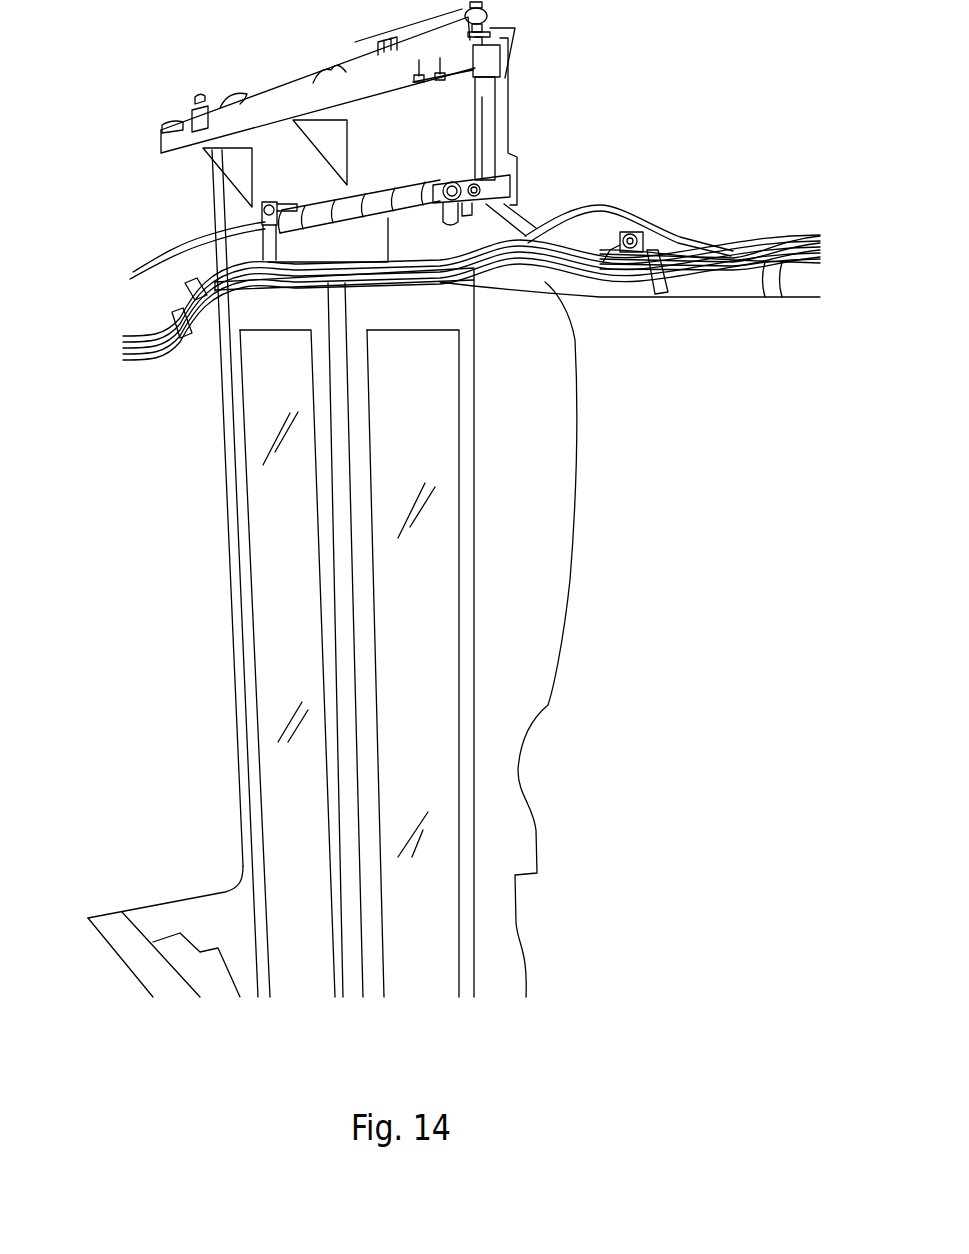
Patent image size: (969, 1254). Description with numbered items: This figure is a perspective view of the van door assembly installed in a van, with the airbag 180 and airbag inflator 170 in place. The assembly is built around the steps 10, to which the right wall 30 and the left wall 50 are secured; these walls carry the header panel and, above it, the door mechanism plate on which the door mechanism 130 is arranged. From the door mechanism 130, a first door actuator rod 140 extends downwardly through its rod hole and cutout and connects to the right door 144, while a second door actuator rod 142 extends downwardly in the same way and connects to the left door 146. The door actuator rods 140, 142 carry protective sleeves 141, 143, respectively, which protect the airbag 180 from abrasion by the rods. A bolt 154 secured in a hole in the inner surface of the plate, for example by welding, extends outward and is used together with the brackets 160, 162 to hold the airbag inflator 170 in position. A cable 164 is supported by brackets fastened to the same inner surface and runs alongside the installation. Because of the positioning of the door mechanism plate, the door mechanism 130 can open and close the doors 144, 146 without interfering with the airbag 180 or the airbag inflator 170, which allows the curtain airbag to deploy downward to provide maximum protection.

The steps 10 is at (133, 953).
The right wall 30 is at (208, 918).
The left wall 50 is at (538, 498).
The door mechanism 130 is at (327, 47).
The door actuator rod 140 is at (227, 182).
The protective sleeve 141 is at (230, 197).
The door actuator rod 142 is at (490, 107).
The protective sleeve 143 is at (488, 142).
The right door 144 is at (285, 313).
The left door 146 is at (418, 310).
The bolt 154 is at (287, 200).
The bracket 160 is at (233, 223).
The bracket 162 is at (498, 192).
The cable 164 is at (607, 203).
The airbag inflator 170 is at (353, 208).
The airbag 180 is at (727, 283).